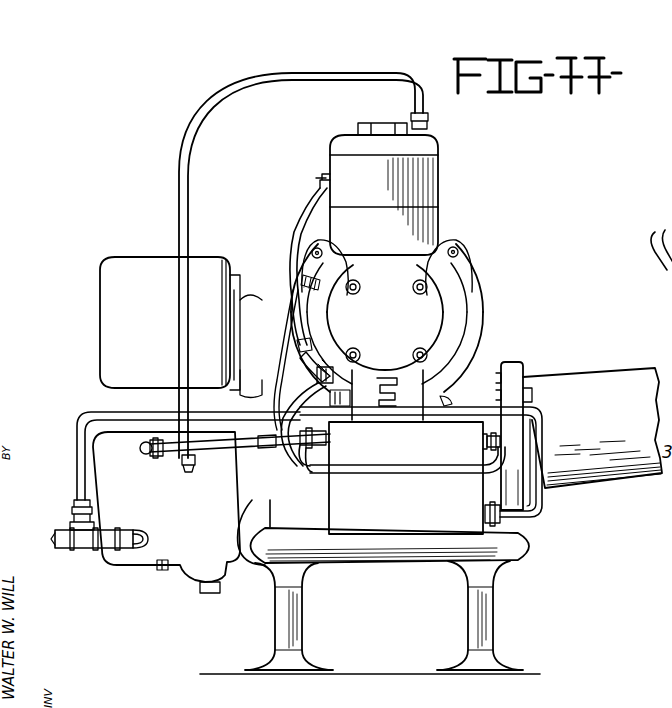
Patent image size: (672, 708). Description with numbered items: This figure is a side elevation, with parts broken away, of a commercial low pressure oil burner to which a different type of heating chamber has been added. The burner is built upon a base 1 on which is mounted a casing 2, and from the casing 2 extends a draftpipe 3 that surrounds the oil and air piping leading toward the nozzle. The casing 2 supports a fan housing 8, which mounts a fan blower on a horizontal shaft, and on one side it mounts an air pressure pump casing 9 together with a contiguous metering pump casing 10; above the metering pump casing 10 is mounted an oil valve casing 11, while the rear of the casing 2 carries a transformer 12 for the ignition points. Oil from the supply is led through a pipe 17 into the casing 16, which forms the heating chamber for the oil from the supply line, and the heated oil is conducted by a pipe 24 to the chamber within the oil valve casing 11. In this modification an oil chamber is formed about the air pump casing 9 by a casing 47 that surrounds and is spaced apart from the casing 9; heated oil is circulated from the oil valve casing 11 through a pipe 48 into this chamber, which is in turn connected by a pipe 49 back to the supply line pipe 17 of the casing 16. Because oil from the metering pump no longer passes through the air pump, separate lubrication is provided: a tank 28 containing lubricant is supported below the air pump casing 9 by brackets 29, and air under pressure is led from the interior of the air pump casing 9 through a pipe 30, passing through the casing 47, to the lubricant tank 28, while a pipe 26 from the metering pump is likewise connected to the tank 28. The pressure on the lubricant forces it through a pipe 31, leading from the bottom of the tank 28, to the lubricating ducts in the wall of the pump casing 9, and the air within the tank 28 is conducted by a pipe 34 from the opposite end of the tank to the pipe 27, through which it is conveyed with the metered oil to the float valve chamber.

The base 1 is at (378, 552).
The casing 2 is at (270, 508).
The draftpipe 3 is at (555, 382).
The fan housing 8 is at (468, 250).
The air pressure pump casing 9 is at (447, 274).
The metering pump casing 10 is at (438, 330).
The oil valve casing 11 is at (428, 222).
The transformer 12 is at (181, 327).
The casing 16 is at (93, 468).
The pipe 17 is at (63, 548).
The pipe 24 is at (290, 74).
The pipe 26 is at (486, 360).
The pipe 27 is at (213, 450).
The tank 28 is at (415, 532).
The brackets 29 is at (438, 396).
The pipe 30 is at (303, 382).
The pipe 31 is at (543, 428).
The pipe 34 is at (303, 450).
The casing 47 is at (442, 290).
The pipe 48 is at (297, 220).
The pipe 49 is at (77, 426).